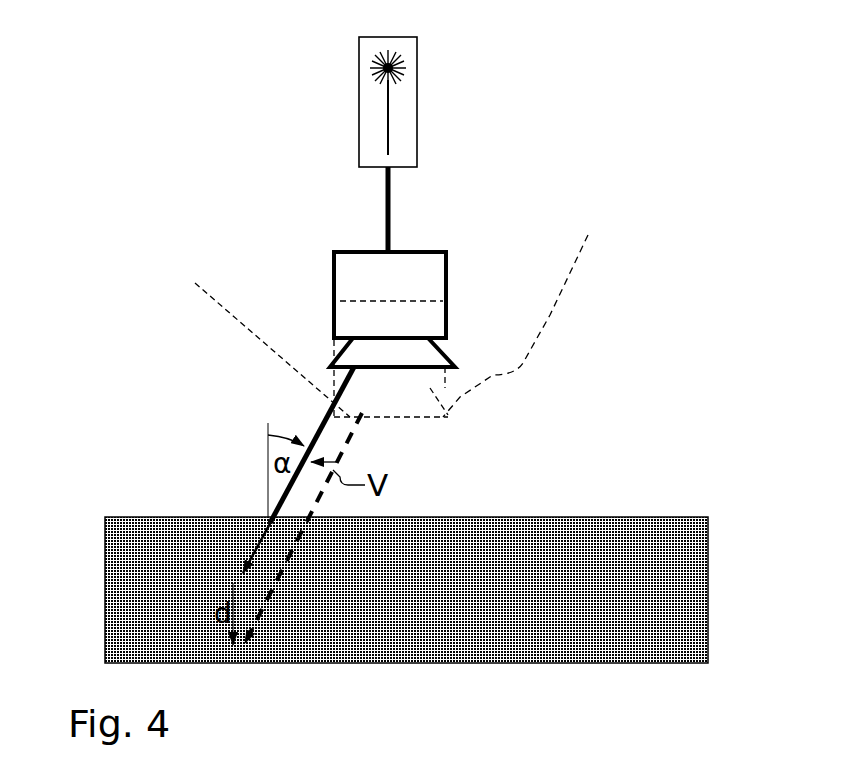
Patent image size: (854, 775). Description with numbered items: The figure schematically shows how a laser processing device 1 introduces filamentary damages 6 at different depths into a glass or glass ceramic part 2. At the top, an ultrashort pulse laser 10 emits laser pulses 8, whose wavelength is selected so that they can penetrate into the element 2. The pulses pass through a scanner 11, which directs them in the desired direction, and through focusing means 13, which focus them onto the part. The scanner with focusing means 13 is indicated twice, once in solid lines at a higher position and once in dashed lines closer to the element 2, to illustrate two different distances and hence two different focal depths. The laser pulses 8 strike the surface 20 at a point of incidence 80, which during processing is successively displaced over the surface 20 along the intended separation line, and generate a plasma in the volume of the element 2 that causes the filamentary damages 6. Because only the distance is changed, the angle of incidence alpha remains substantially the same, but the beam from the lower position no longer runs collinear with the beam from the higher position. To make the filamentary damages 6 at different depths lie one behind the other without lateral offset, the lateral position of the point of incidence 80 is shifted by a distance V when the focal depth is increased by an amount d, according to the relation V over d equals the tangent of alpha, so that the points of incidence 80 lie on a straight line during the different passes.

The laser processing device 1 is at (285, 147).
The ultrashort pulse laser 10 is at (417, 128).
The scanner 11 is at (448, 282).
The focusing means 13 is at (330, 367).
The laser pulses 8 is at (340, 458).
The point of incidence 80 is at (263, 513).
The filamentary damages 6 is at (250, 536).
The surface 20 is at (152, 517).
The glass or glass ceramic part 2 is at (702, 518).